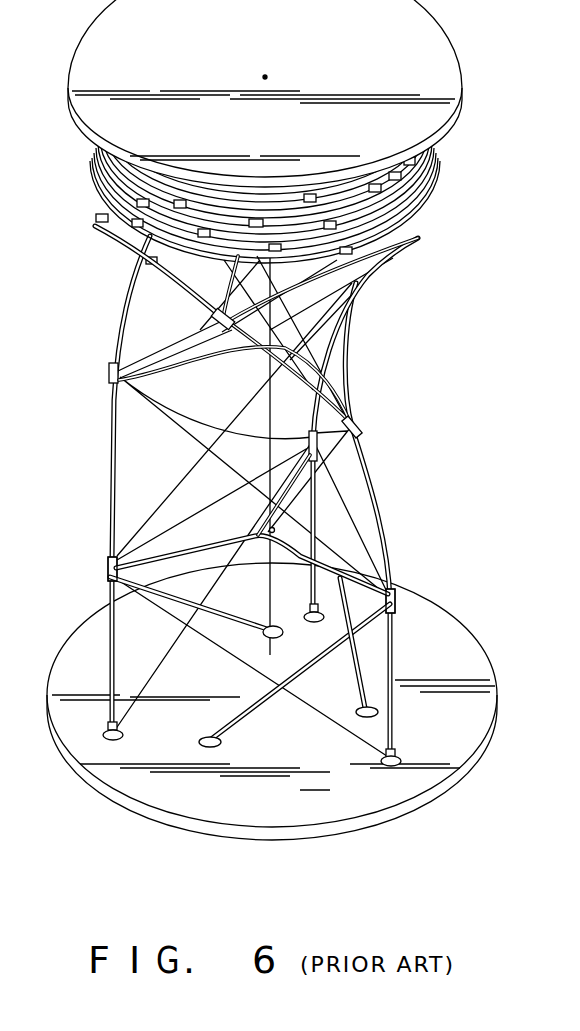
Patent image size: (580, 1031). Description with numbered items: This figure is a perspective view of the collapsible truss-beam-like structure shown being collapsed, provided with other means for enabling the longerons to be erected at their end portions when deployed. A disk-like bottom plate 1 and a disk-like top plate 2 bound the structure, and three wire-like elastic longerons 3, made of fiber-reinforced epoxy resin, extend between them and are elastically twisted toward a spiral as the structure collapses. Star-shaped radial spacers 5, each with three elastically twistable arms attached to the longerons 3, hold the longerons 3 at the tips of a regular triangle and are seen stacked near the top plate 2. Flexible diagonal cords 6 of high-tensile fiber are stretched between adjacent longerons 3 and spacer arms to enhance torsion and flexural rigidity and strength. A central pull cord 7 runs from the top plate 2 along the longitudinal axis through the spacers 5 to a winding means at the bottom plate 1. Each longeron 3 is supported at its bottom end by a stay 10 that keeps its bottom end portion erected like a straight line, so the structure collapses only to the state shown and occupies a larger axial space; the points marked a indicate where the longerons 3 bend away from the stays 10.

The bottom plate 1 is at (480, 673).
The top plate 2 is at (450, 40).
The longerons 3 is at (436, 165).
The radial spacers 5 is at (128, 233).
The diagonal cords 6 is at (190, 468).
The pull cord 7 is at (272, 657).
The stay 10 is at (185, 600).
The brackets a is at (101, 551).